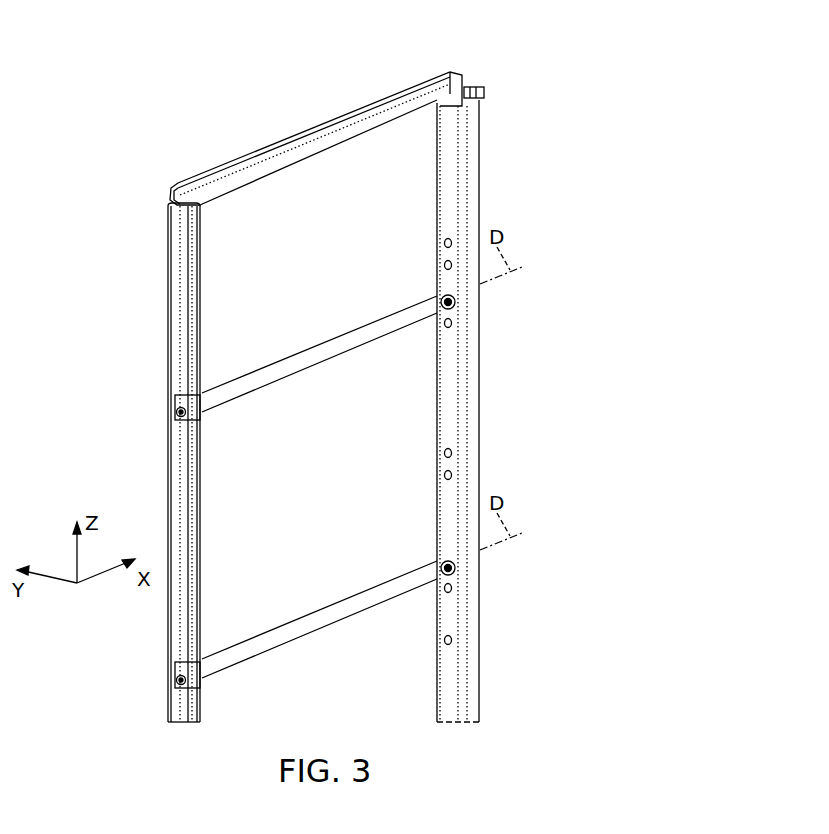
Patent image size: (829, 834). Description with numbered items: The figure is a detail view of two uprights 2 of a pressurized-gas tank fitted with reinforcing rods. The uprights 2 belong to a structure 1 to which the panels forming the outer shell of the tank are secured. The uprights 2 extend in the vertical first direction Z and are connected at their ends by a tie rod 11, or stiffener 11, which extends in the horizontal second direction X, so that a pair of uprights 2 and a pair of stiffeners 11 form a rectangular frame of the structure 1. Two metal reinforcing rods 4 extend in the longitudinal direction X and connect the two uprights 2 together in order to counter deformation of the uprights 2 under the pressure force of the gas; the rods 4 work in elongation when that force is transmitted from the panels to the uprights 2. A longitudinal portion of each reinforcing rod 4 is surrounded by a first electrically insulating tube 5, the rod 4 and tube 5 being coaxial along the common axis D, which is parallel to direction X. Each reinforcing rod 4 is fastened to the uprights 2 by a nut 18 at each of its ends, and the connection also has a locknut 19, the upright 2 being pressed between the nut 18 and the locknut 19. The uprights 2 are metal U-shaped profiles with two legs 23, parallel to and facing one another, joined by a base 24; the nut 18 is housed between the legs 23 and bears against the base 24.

The structure 1 is at (366, 84).
The upright 2 is at (453, 160).
The reinforcing rod 4 is at (180, 415).
The first insulating tube 5 is at (389, 326).
The tie rod 11 is at (290, 160).
The nut 18 is at (178, 405).
The locknut 19 is at (455, 300).
The leg 23 is at (178, 240).
The base 24 is at (188, 325).